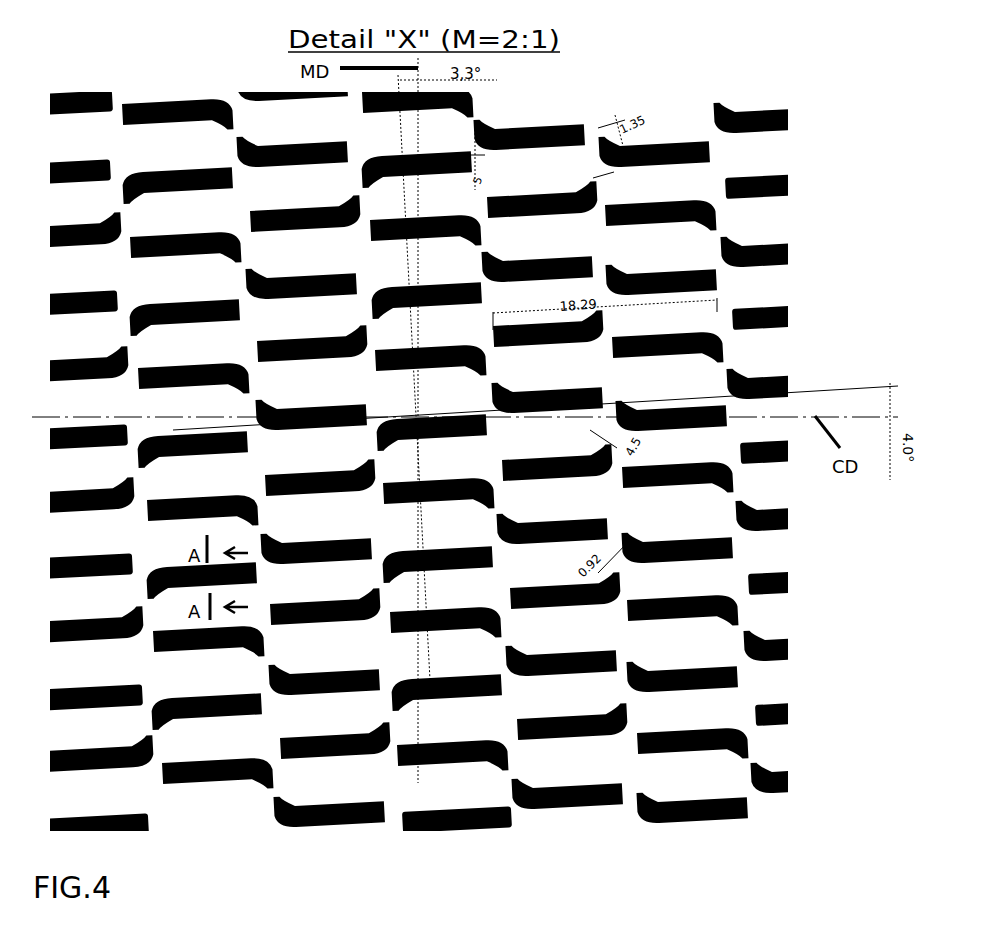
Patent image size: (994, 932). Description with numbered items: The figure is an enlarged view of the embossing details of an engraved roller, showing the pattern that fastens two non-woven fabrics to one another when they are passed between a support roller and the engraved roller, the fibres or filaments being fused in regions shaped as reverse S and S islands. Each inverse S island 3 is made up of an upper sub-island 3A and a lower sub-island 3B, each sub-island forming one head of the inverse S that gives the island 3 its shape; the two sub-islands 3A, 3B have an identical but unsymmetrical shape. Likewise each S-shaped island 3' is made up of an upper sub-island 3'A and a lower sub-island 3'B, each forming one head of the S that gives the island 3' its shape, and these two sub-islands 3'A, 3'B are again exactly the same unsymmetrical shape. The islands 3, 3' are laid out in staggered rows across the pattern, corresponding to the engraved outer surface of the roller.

The inverse S island 3 is at (175, 77).
The upper sub-island 3A is at (160, 105).
The lower sub-island 3B is at (292, 148).
The S-shaped island 3' is at (87, 638).
The upper sub-island 3'A is at (177, 169).
The lower sub-island 3'B is at (87, 646).